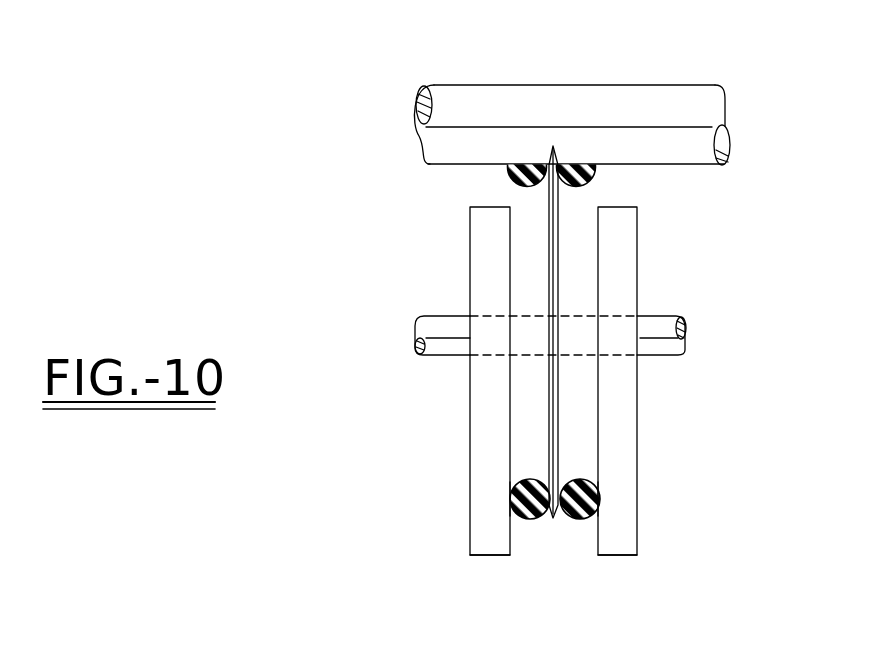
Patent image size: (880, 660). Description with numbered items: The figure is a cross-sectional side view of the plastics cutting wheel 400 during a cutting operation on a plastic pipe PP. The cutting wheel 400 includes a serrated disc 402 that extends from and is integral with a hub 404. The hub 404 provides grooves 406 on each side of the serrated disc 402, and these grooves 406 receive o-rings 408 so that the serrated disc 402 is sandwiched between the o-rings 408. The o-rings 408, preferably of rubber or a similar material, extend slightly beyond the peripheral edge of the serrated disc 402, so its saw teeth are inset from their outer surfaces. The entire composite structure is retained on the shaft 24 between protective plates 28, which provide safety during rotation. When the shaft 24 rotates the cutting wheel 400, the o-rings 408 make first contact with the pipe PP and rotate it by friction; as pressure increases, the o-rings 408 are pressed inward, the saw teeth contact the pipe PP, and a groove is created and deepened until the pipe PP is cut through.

The plastics cutting wheel 400 is at (398, 250).
The plastic pipe PP is at (603, 87).
The o-rings 408 is at (518, 181).
The hub 404 is at (590, 412).
The grooves 406 is at (511, 482).
The protective plates 28 is at (488, 553).
The serrated disc 402 is at (554, 518).
The shaft 24 is at (675, 316).